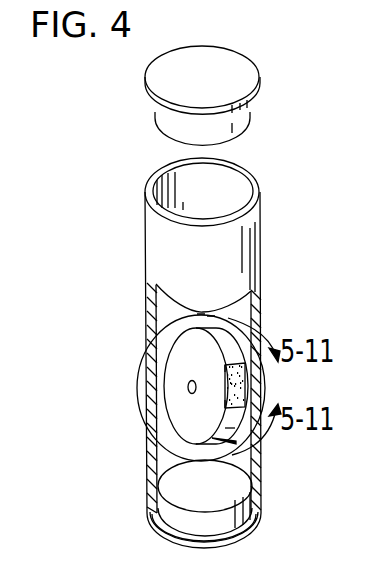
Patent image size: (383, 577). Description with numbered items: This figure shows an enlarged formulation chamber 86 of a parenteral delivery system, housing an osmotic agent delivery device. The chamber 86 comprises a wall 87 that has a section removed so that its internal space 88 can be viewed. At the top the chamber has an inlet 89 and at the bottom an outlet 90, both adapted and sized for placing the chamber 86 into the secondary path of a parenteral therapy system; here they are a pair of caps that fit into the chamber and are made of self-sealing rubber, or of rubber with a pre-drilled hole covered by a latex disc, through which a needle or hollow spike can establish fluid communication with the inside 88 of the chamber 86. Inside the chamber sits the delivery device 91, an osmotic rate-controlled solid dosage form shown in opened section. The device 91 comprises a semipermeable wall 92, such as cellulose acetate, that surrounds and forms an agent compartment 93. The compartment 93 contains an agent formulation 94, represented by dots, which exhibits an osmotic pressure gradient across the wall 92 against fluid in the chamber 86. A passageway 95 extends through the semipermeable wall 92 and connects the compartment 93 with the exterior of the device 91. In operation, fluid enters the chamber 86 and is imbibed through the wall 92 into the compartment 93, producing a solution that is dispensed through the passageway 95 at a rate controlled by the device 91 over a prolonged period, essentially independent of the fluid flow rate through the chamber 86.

The formulation chamber 86 is at (282, 266).
The wall 87 is at (259, 312).
The internal space 88 is at (158, 316).
The inlet 89 is at (258, 91).
The outlet 90 is at (262, 522).
The delivery device 91 is at (178, 447).
The semipermeable wall 92 is at (225, 367).
The agent compartment 93 is at (248, 384).
The agent formulation 94 is at (232, 400).
The passageway 95 is at (188, 387).